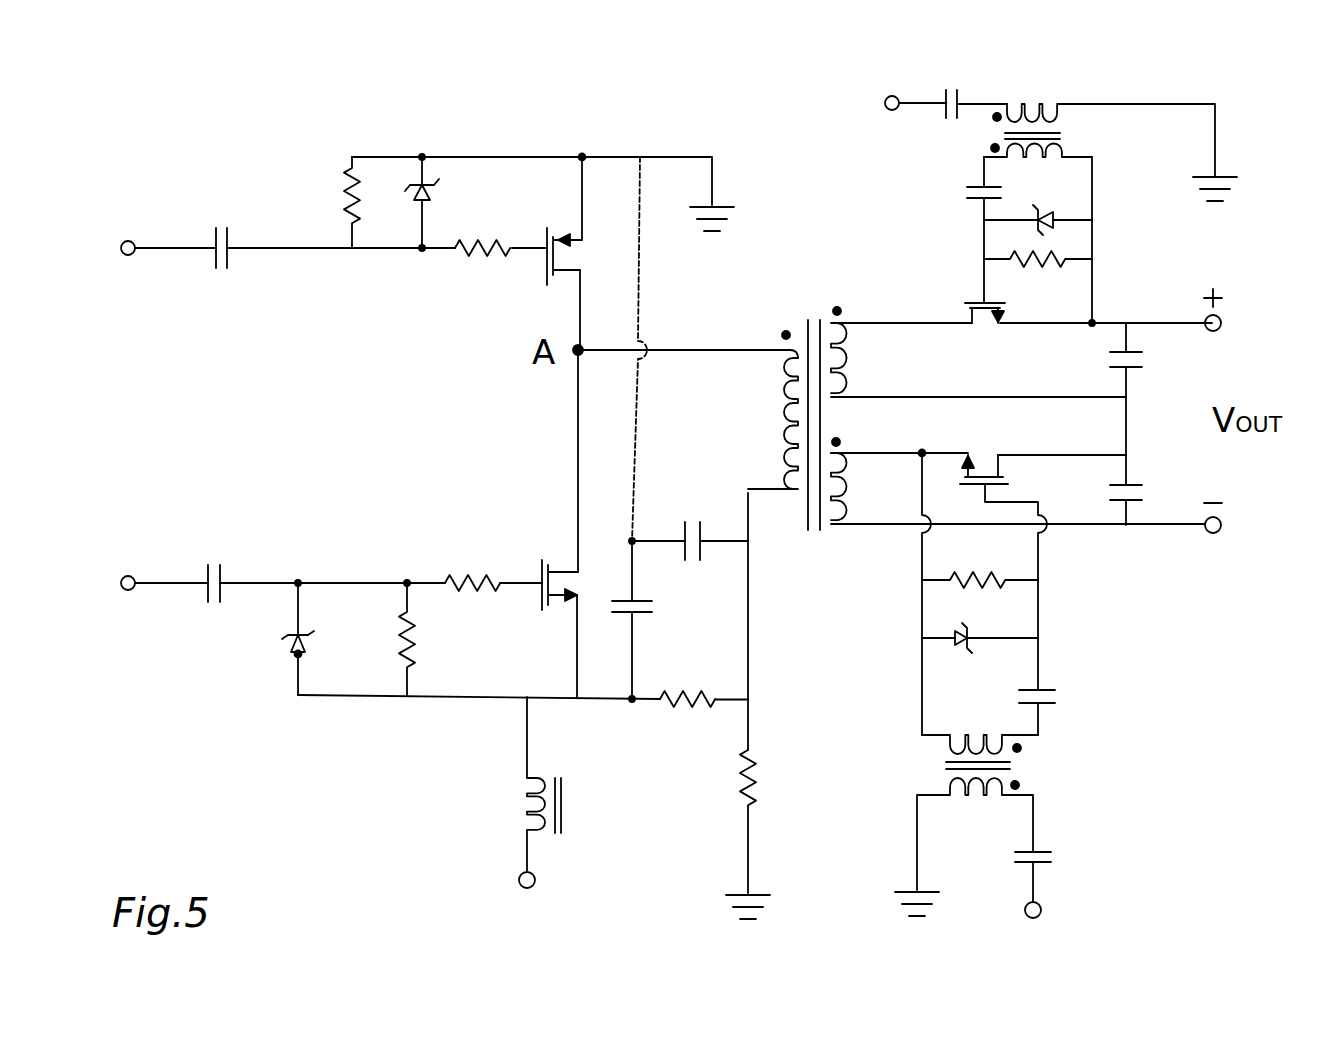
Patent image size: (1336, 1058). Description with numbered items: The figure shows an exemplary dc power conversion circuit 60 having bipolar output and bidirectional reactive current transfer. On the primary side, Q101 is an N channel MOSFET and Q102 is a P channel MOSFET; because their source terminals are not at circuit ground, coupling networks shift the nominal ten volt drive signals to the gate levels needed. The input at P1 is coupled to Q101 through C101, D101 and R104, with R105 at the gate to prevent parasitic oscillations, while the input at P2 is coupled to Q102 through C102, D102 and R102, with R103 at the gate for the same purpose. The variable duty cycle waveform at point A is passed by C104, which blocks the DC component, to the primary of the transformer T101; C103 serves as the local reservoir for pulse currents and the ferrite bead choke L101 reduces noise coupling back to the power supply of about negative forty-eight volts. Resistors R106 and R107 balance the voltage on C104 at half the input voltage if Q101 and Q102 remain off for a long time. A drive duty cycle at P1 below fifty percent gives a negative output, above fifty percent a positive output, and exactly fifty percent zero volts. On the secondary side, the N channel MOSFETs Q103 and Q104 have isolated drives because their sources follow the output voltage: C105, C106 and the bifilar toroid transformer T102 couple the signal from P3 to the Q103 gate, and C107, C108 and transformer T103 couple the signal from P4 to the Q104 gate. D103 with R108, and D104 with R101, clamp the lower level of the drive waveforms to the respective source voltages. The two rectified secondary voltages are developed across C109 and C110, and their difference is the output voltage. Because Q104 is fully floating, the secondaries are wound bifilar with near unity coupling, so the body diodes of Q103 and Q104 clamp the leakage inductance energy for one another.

The transformer T101 is at (855, 421).
The transformer T102 is at (1110, 132).
The transformer T103 is at (995, 825).
The N channel MOSFET Q101 is at (538, 603).
The P channel MOSFET Q102 is at (550, 244).
The N channel MOSFET Q103 is at (944, 307).
The N channel MOSFET Q104 is at (978, 455).
The capacitor C101 is at (216, 569).
The capacitor C102 is at (233, 265).
The capacitor C103 is at (654, 620).
The capacitor C104 is at (690, 535).
The capacitor C105 is at (955, 121).
The capacitor C106 is at (952, 230).
The capacitor C107 is at (1065, 684).
The capacitor C108 is at (1067, 874).
The capacitor C109 is at (1162, 404).
The capacitor C110 is at (1153, 492).
The resistor R101 is at (980, 567).
The resistor R102 is at (325, 202).
The resistor R103 is at (479, 269).
The resistor R104 is at (377, 639).
The resistor R105 is at (464, 571).
The resistor R106 is at (680, 715).
The resistor R107 is at (774, 834).
The resistor R108 is at (1038, 271).
The diode D101 is at (261, 639).
The diode D102 is at (452, 202).
The diode D103 is at (1038, 208).
The diode D104 is at (980, 625).
The inductor L101 is at (516, 813).
The input drive signal P1 is at (164, 563).
The input drive signal P2 is at (158, 183).
The input drive signal P3 is at (899, 86).
The input drive signal P4 is at (1056, 914).
The power conversion circuit 60 is at (1224, 872).